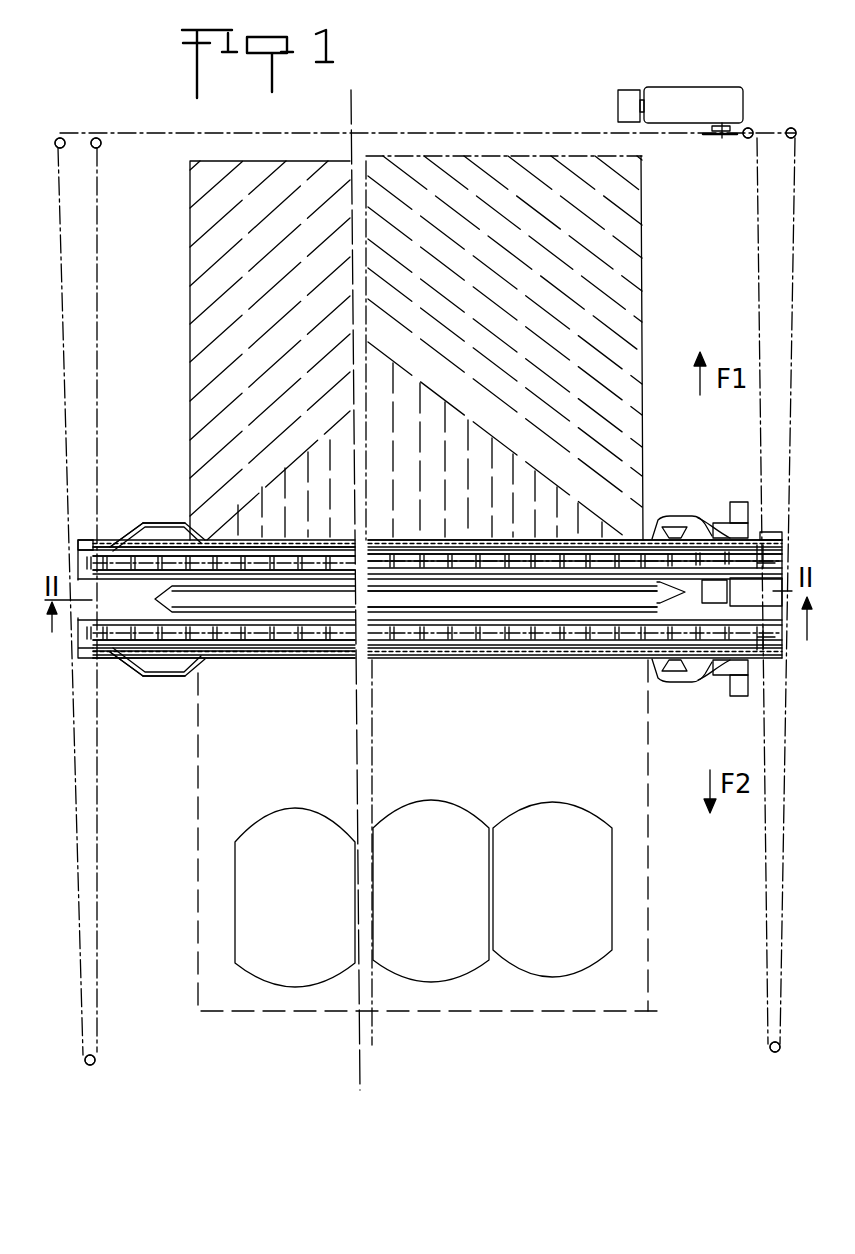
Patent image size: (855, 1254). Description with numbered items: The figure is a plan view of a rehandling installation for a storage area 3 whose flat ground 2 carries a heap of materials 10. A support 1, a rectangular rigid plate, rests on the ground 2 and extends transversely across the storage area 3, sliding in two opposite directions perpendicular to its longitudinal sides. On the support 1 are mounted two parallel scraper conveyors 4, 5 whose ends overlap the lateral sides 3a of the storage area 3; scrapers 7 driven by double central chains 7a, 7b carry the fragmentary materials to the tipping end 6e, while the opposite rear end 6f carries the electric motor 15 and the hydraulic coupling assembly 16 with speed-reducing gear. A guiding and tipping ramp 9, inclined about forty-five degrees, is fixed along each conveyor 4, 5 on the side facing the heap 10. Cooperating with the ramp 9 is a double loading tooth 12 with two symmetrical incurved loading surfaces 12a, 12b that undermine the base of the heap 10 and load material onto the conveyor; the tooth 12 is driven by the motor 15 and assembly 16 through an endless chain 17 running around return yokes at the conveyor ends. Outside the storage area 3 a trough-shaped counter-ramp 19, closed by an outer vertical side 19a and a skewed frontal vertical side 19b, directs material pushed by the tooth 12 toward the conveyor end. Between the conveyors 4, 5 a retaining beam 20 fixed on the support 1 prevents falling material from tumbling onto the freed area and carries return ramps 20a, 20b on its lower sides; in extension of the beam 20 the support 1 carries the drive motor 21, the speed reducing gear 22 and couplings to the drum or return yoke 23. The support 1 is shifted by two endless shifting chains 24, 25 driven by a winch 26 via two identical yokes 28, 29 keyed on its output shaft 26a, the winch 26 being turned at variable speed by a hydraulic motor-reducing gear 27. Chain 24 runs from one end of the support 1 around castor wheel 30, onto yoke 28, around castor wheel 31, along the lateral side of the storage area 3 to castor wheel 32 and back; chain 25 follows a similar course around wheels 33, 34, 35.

The support 1 is at (283, 662).
The ground 2 is at (426, 738).
The storage area 3 is at (222, 321).
The lateral sides of the storage area 3a is at (190, 408).
The scraper conveyor 4 is at (265, 550).
The scraper conveyor 5 is at (316, 643).
The tipping end 6e is at (86, 548).
The rear end 6f is at (766, 532).
The scrapers 7 is at (300, 547).
The central chain 7a is at (385, 550).
The central chain 7b is at (430, 557).
The guiding and tipping ramp 9 is at (340, 545).
The heap of materials 10 is at (546, 280).
The double loading tooth 12 is at (677, 520).
The incurved loading surface 12a is at (650, 536).
The incurved loading surface 12b is at (705, 518).
The electric motor 15 is at (738, 502).
The hydraulic coupling assembly 16 is at (722, 523).
The endless chain 17 is at (478, 543).
The counter-ramp 19 is at (145, 523).
The outer vertical side 19a is at (166, 523).
The closed frontal vertical side 19b is at (112, 545).
The retaining beam 20 is at (497, 608).
The return ramp 20a is at (516, 585).
The return ramp 20b is at (530, 613).
The drive motor 21 is at (700, 600).
The speed reducing gear 22 is at (770, 580).
The drum or return yoke 23 is at (770, 550).
The endless shifting chain 24 is at (58, 224).
The endless shifting chain 25 is at (759, 246).
The winch 26 is at (672, 96).
The output shaft 26a is at (722, 137).
The hydraulic motor-reducing gear 27 is at (618, 105).
The yoke 28 is at (712, 134).
The yoke 29 is at (728, 126).
The return gear wheel 30 is at (98, 138).
The return gear wheel 31 is at (62, 138).
The return gear wheel 32 is at (95, 1060).
The return gear wheel 33 is at (765, 120).
The return gear wheel 34 is at (791, 128).
The return gear wheel 35 is at (770, 1048).